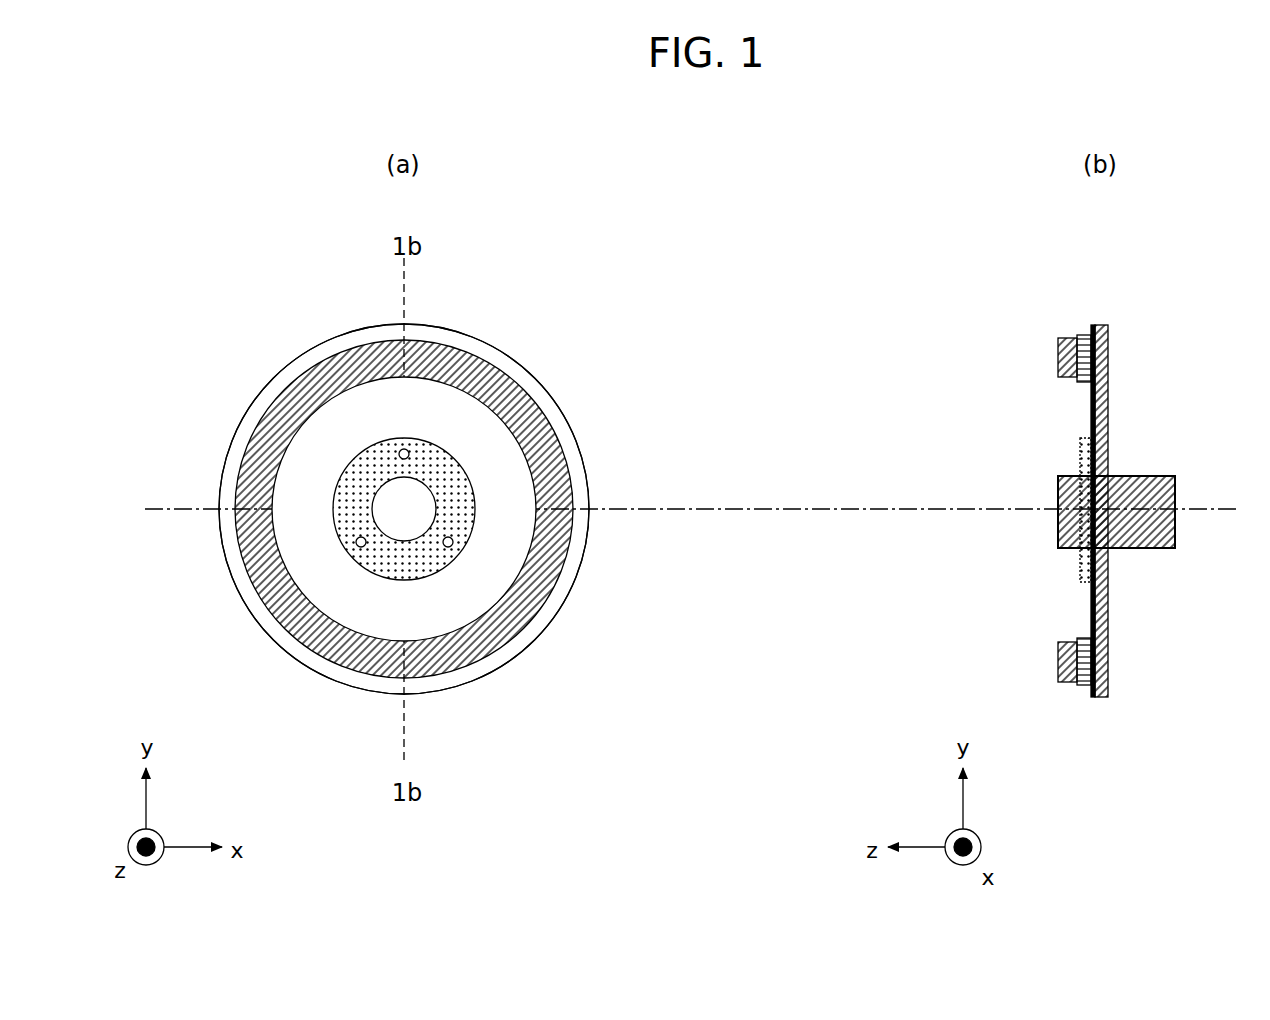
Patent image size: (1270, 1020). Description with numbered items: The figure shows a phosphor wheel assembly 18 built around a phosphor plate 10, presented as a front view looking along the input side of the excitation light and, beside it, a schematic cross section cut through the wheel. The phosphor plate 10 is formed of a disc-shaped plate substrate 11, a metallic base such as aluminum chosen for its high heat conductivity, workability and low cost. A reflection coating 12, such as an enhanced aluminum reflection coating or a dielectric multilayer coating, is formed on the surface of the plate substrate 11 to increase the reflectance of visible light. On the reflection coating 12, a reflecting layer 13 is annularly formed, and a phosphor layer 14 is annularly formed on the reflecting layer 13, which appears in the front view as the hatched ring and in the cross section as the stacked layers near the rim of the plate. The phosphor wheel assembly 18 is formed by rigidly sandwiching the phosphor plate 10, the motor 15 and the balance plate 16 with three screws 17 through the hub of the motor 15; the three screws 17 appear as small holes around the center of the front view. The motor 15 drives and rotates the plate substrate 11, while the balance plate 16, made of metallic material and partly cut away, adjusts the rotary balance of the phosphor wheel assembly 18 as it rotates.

The phosphor plate 10 is at (443, 708).
The plate substrate 11 is at (308, 350).
The reflection coating 12 is at (464, 342).
The reflecting layer 13 is at (1088, 330).
The phosphor layer 14 is at (262, 453).
The motor 15 is at (420, 497).
The balance plate 16 is at (358, 526).
The screws 17 is at (409, 456).
The phosphor wheel assembly 18 is at (334, 252).